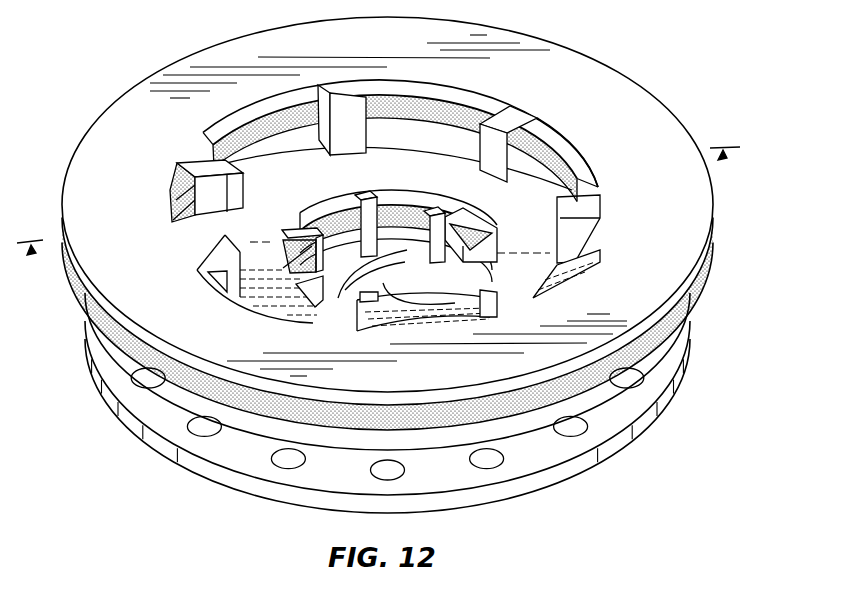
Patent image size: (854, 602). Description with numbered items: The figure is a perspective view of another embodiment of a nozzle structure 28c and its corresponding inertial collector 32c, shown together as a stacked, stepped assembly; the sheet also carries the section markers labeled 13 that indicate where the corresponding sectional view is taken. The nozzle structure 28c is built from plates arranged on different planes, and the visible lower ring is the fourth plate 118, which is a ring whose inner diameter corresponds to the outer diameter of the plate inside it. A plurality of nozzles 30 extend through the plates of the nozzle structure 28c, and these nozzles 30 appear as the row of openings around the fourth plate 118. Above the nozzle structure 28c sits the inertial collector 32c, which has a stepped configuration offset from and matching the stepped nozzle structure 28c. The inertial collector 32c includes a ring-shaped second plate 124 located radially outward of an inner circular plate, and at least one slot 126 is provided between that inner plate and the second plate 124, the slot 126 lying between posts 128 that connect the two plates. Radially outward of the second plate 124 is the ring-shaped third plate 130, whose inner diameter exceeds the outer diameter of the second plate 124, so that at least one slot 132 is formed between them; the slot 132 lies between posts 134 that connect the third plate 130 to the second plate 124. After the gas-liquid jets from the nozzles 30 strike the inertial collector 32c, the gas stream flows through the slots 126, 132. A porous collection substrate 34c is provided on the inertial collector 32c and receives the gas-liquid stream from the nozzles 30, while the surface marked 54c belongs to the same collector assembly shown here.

The inertial collector 32c is at (605, 56).
The top plate surface 54c is at (645, 135).
The third plate 130 is at (138, 218).
The porous collection substrate 34c is at (688, 300).
The fourth plate 118 is at (614, 404).
The nozzle structure 28c is at (700, 358).
The nozzles 30 is at (572, 430).
The section line 13 is at (724, 158).
The second plate 124 is at (414, 175).
The slot 132 is at (440, 130).
The posts 134 is at (502, 122).
The posts 128 is at (370, 200).
The slot 126 is at (340, 297).